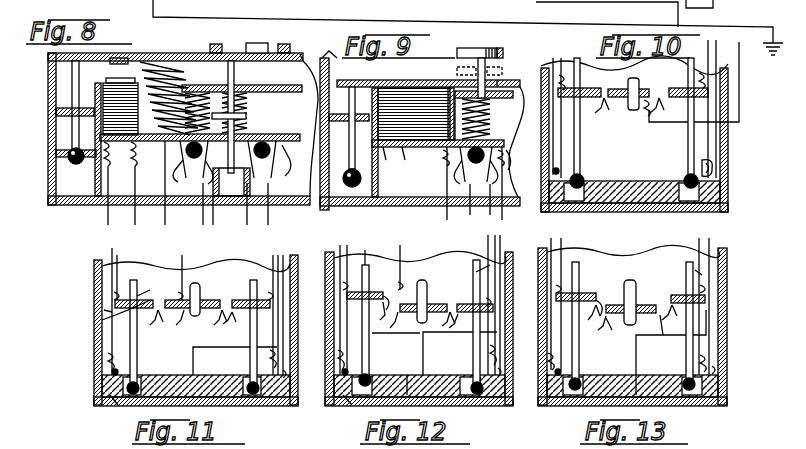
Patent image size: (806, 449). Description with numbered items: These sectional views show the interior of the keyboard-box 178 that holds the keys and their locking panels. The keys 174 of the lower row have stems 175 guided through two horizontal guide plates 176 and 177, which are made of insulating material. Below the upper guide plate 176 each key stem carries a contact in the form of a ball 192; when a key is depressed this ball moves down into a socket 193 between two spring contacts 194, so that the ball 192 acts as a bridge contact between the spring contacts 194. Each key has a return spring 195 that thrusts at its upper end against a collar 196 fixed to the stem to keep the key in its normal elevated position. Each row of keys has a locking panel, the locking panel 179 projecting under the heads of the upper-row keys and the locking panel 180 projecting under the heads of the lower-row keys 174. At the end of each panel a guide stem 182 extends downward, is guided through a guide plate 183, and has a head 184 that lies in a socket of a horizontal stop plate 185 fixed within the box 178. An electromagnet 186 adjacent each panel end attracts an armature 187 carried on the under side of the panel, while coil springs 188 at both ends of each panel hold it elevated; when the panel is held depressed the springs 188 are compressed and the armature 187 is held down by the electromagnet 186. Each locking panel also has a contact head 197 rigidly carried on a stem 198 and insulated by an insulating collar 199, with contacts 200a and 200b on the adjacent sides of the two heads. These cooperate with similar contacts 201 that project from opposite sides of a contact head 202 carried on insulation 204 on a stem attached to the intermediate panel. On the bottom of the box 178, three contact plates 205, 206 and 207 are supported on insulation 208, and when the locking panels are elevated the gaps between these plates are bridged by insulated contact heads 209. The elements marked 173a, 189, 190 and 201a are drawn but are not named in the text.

In FIG. 9, the lock nut 173a is at (500, 50).
In FIG. 8, the keys 174 is at (215, 44).
In FIG. 8, the stems 175 is at (255, 48).
In FIG. 9, the stems 175 is at (479, 64).
In FIG. 8, the guide plate 176 is at (306, 95).
In FIG. 9, the guide plate 176 is at (488, 104).
In FIG. 8, the guide plate 177 is at (289, 153).
In FIG. 9, the guide plate 177 is at (502, 142).
In FIG. 8, the keyboard-box 178 is at (43, 151).
In FIG. 10, the keyboard-box 178 is at (733, 193).
In FIG. 11, the keyboard-box 178 is at (88, 299).
In FIG. 12, the keyboard-box 178 is at (419, 317).
In FIG. 13, the keyboard-box 178 is at (733, 350).
In FIG. 9, the locking panel 179 is at (498, 80).
In FIG. 8, the locking panel 180 is at (301, 57).
In FIG. 8, the guide stem 182 is at (72, 70).
In FIG. 9, the guide stem 182 is at (351, 114).
In FIG. 12, the guide stem 182 is at (370, 250).
In FIG. 8, the guide plate 183 is at (56, 127).
In FIG. 8, the head 184 is at (73, 168).
In FIG. 9, the head 184 is at (372, 208).
In FIG. 8, the stop plate 185 is at (48, 170).
In FIG. 8, the electromagnet 186 is at (103, 93).
In FIG. 9, the electromagnet 186 is at (397, 150).
In FIG. 8, the armature 187 is at (128, 60).
In FIG. 9, the armature 187 is at (405, 87).
In FIG. 8, the coil springs 188 is at (170, 142).
In FIG. 9, the coil springs 188 is at (438, 151).
In FIG. 8, the cross bar 189 is at (246, 90).
In FIG. 8, the spring 190 is at (265, 125).
In FIG. 8, the ball 192 is at (224, 181).
In FIG. 9, the ball 192 is at (466, 172).
In FIG. 8, the socket 193 is at (235, 185).
In FIG. 9, the socket 193 is at (470, 182).
In FIG. 8, the spring contacts 194 is at (185, 200).
In FIG. 9, the spring contacts 194 is at (478, 205).
In FIG. 8, the return spring 195 is at (270, 111).
In FIG. 9, the return spring 195 is at (492, 122).
In FIG. 8, the collar 196 is at (192, 85).
In FIG. 9, the collar 196 is at (502, 93).
In FIG. 8, the contact head 197 is at (231, 128).
In FIG. 11, the contact head 197 is at (138, 300).
In FIG. 12, the contact head 197 is at (347, 291).
In FIG. 13, the contact head 197 is at (586, 295).
In FIG. 10, the stem 198 is at (580, 127).
In FIG. 11, the stem 198 is at (130, 335).
In FIG. 12, the stem 198 is at (362, 318).
In FIG. 13, the stem 198 is at (693, 324).
In FIG. 11, the insulating collar 199 is at (125, 311).
In FIG. 12, the insulating collar 199 is at (476, 302).
In FIG. 12, the contact 200a is at (382, 292).
In FIG. 13, the contact 200a is at (596, 323).
In FIG. 11, the contact 200b is at (234, 328).
In FIG. 12, the contact 200b is at (448, 334).
In FIG. 13, the contact 200b is at (700, 275).
In FIG. 12, the contacts 201 is at (396, 343).
In FIG. 13, the contacts 201 is at (617, 337).
In FIG. 13, the contact 201a is at (660, 335).
In FIG. 10, the contact head 202 is at (641, 86).
In FIG. 11, the contact head 202 is at (198, 312).
In FIG. 12, the contact head 202 is at (405, 314).
In FIG. 13, the contact head 202 is at (640, 300).
In FIG. 11, the insulation 204 is at (202, 300).
In FIG. 12, the insulation 204 is at (428, 290).
In FIG. 10, the contact plate 205 is at (581, 178).
In FIG. 11, the contact plate 205 is at (196, 283).
In FIG. 12, the contact plate 205 is at (421, 280).
In FIG. 13, the contact plate 205 is at (568, 405).
In FIG. 10, the contact plate 206 is at (626, 181).
In FIG. 11, the contact plate 206 is at (160, 375).
In FIG. 12, the contact plate 206 is at (447, 368).
In FIG. 13, the contact plate 206 is at (602, 368).
In FIG. 10, the contact plate 207 is at (722, 160).
In FIG. 11, the contact plate 207 is at (285, 406).
In FIG. 12, the contact plate 207 is at (500, 375).
In FIG. 13, the contact plate 207 is at (720, 378).
In FIG. 11, the insulation 208 is at (110, 405).
In FIG. 12, the insulation 208 is at (343, 375).
In FIG. 13, the insulation 208 is at (658, 375).
In FIG. 11, the insulated contact heads 209 is at (133, 406).
In FIG. 12, the insulated contact heads 209 is at (358, 406).
In FIG. 13, the insulated contact heads 209 is at (575, 406).